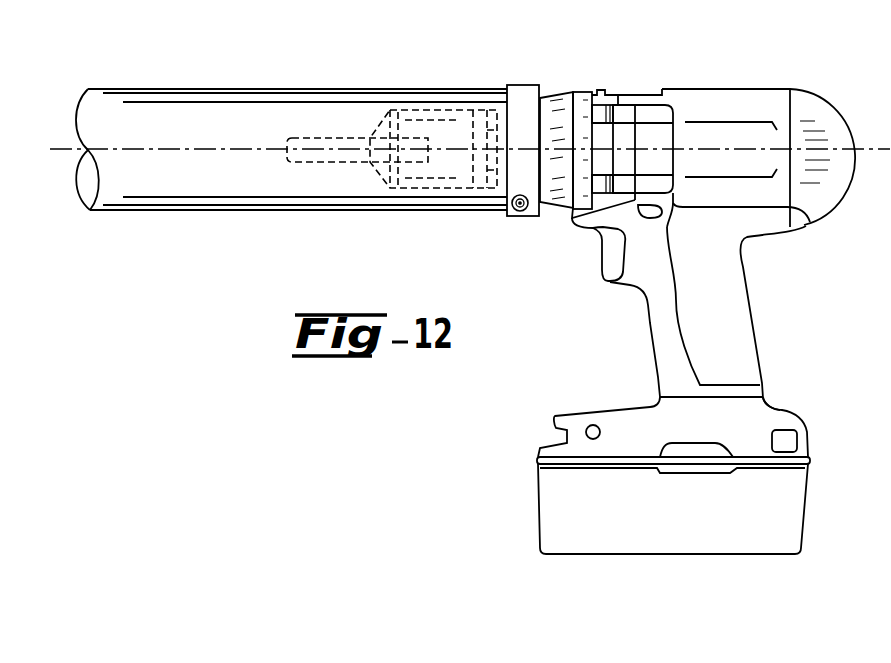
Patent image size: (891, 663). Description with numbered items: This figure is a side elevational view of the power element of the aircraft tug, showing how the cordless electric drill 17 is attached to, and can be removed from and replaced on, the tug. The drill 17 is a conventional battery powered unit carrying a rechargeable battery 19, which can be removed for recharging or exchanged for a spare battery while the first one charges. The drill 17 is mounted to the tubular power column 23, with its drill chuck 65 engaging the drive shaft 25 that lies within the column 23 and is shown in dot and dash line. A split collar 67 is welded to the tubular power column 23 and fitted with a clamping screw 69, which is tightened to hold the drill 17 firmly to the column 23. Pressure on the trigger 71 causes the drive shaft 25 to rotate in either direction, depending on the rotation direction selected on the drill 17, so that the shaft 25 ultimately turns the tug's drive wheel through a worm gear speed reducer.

The cordless electric drill 17 is at (723, 88).
The rechargeable battery 19 is at (770, 537).
The tubular power column 23 is at (180, 89).
The drive shaft 25 is at (329, 140).
The drill chuck 65 is at (438, 120).
The split collar 67 is at (522, 86).
The clamping screw 69 is at (519, 212).
The trigger 71 is at (613, 272).